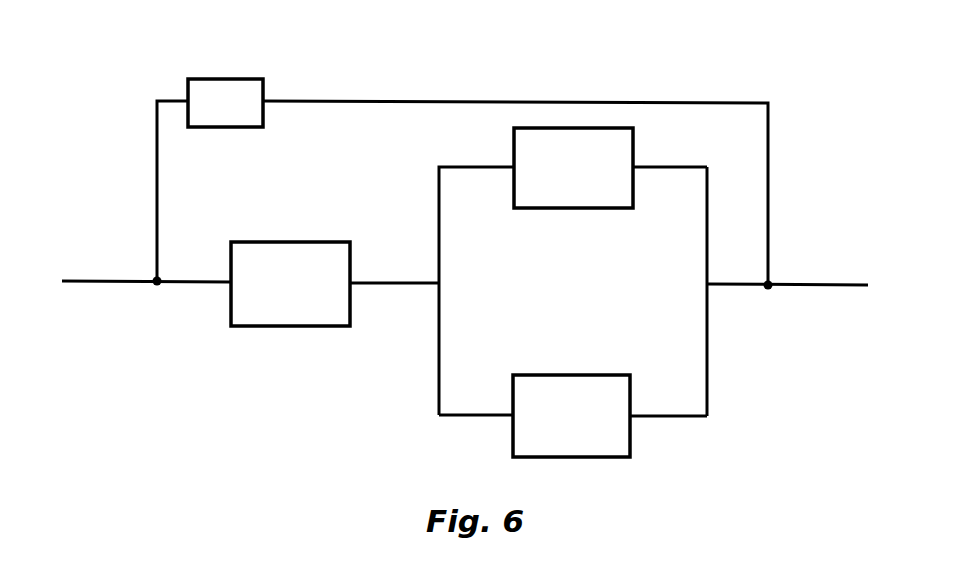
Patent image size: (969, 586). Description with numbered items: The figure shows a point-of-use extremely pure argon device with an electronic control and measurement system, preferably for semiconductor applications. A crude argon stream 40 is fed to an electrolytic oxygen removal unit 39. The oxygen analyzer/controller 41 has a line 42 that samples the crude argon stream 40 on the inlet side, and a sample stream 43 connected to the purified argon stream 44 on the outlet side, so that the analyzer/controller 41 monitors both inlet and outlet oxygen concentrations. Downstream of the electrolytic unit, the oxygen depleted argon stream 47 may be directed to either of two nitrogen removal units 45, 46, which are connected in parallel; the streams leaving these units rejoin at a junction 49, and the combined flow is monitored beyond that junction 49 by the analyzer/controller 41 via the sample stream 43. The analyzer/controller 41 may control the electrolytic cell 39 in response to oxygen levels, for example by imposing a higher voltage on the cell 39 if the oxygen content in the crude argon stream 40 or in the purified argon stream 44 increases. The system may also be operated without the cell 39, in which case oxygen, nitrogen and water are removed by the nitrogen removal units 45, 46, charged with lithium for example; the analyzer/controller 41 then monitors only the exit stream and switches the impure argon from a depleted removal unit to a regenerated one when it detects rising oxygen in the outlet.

The electrolytic oxygen removal unit 39 is at (267, 327).
The crude argon stream 40 is at (122, 282).
The oxygen analyzer/controller 41 is at (232, 79).
The line 42 is at (155, 200).
The sample stream 43 is at (402, 102).
The purified argon stream 44 is at (820, 284).
The nitrogen removal unit 45 is at (573, 271).
The nitrogen removal unit 46 is at (573, 416).
The oxygen depleted argon stream 47 is at (405, 284).
The junction 49 is at (708, 286).